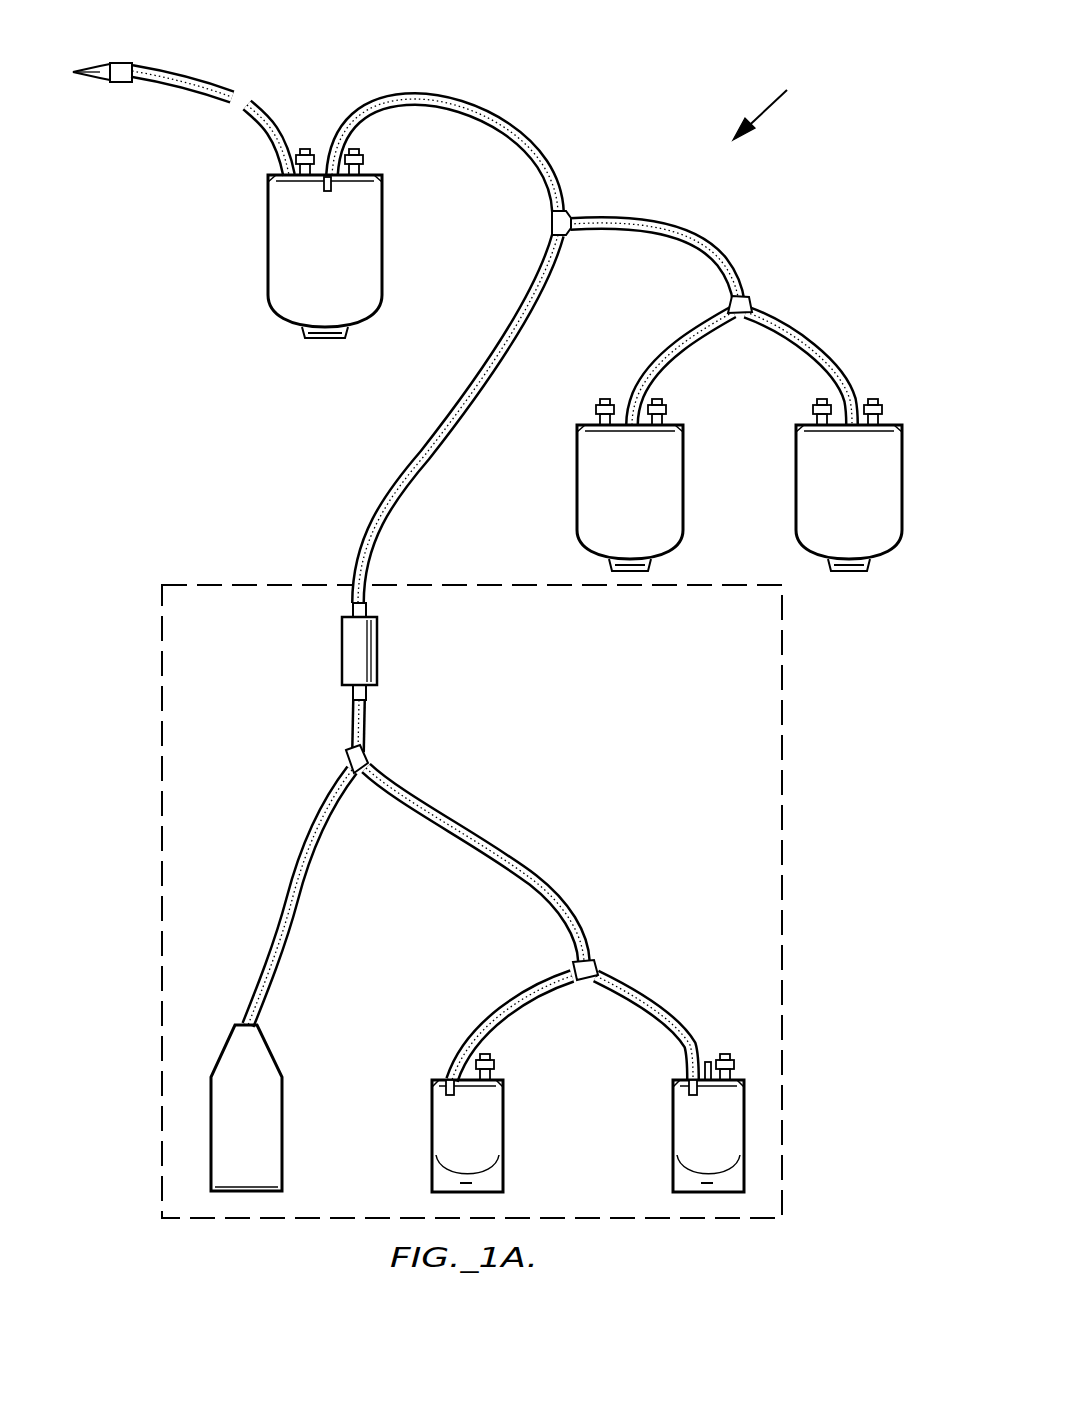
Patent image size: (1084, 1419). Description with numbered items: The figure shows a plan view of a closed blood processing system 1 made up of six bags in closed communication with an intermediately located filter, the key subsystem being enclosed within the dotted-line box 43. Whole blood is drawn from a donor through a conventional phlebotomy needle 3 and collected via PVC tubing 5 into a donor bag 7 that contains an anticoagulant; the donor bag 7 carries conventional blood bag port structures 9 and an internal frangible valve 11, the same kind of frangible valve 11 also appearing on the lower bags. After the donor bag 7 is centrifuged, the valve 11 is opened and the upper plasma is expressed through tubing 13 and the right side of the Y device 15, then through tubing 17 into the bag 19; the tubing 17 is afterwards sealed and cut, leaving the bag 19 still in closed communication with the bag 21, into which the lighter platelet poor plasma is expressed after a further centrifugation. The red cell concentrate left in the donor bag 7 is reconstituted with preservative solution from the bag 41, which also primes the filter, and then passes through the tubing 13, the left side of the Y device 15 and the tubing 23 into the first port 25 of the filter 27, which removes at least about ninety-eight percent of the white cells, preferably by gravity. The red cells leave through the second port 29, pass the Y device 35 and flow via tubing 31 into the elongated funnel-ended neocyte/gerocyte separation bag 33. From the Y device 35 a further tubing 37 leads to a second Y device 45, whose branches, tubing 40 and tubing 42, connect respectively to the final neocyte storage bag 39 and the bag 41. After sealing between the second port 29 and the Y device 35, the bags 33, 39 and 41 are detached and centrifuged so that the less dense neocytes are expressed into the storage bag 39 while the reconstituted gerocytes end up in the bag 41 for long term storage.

The blood collection and processing system 1 is at (779, 103).
The phlebotomy needle 3 is at (122, 64).
The PVC tubing 5 is at (208, 84).
The donor bag 7 is at (383, 273).
The blood bag port structures 9 is at (305, 148).
The internal frangible valve 11 is at (333, 184).
The tubing 13 is at (490, 113).
The Y device 15 is at (569, 217).
The tubing 17 is at (700, 238).
The bag 19 is at (577, 480).
The bag 21 is at (796, 480).
The tubing 23 is at (530, 338).
The first port 25 is at (366, 611).
The filter 27 is at (380, 660).
The second port 29 is at (367, 698).
The tubing 31 is at (296, 914).
The neocyte/gerocyte separation bag 33 is at (282, 1140).
The Y device 35 is at (350, 775).
The tubing 37 is at (550, 885).
The final neocyte storage bag 39 is at (503, 1145).
The tubing branch 40 is at (487, 1015).
The bag 41 is at (673, 1145).
The tubing branch 42 is at (668, 1022).
The dotted-line box 43 is at (783, 805).
The Y-connector 45 is at (590, 982).